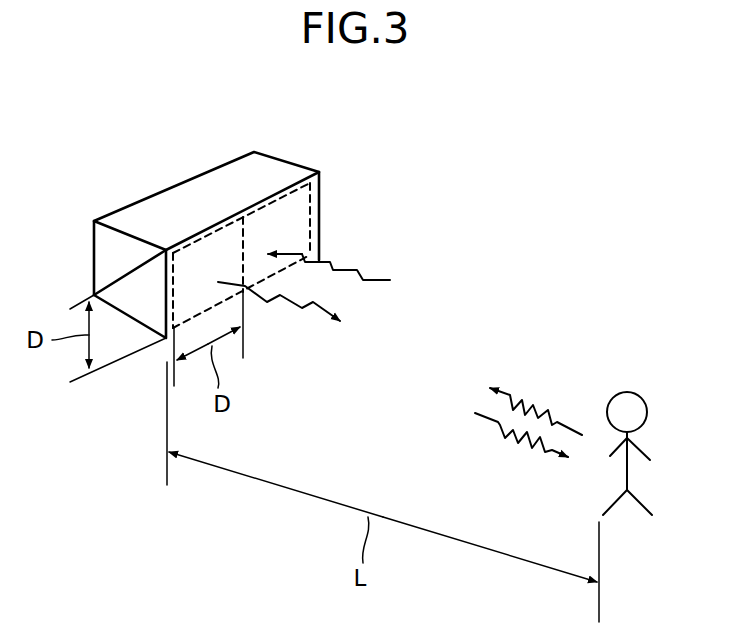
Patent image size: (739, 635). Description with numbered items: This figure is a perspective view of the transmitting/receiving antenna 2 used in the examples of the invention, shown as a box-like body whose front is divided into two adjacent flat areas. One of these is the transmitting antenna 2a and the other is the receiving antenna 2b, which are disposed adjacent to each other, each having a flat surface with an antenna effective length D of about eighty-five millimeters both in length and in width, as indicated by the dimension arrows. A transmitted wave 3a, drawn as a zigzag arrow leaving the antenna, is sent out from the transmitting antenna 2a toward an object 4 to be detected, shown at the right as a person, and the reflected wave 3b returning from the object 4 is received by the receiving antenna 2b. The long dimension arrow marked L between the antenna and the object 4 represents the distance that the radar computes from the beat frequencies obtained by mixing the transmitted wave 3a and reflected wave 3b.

The transmitting/receiving antenna 2 is at (228, 177).
The transmitting antenna 2a is at (195, 253).
The receiving antenna 2b is at (305, 198).
The transmitted wave 3a is at (290, 306).
The reflected wave 3b is at (353, 266).
The object to be detected 4 is at (643, 395).